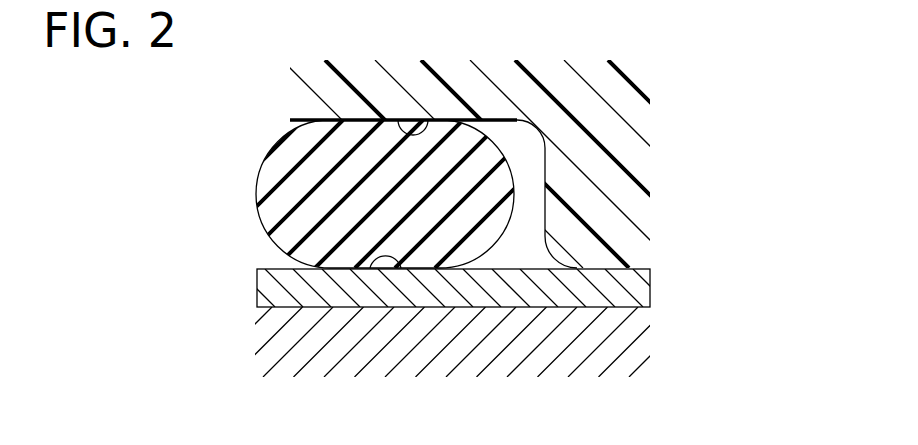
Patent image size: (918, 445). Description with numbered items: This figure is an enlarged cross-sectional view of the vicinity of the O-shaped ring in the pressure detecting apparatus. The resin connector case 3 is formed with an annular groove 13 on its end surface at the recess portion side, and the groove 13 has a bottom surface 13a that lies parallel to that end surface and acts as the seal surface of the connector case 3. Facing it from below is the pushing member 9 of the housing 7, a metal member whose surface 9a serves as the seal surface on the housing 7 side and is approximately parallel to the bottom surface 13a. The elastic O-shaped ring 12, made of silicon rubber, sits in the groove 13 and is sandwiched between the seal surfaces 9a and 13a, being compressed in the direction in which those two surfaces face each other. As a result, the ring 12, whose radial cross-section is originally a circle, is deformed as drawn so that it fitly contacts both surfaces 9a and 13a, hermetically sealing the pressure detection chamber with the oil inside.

The connector case 3 is at (584, 138).
The groove 13 is at (521, 150).
The bottom surface 13a is at (432, 119).
The O-shaped ring 12 is at (282, 192).
The pushing member 9 is at (270, 288).
The surface 9a is at (402, 268).
The housing 7 is at (314, 348).